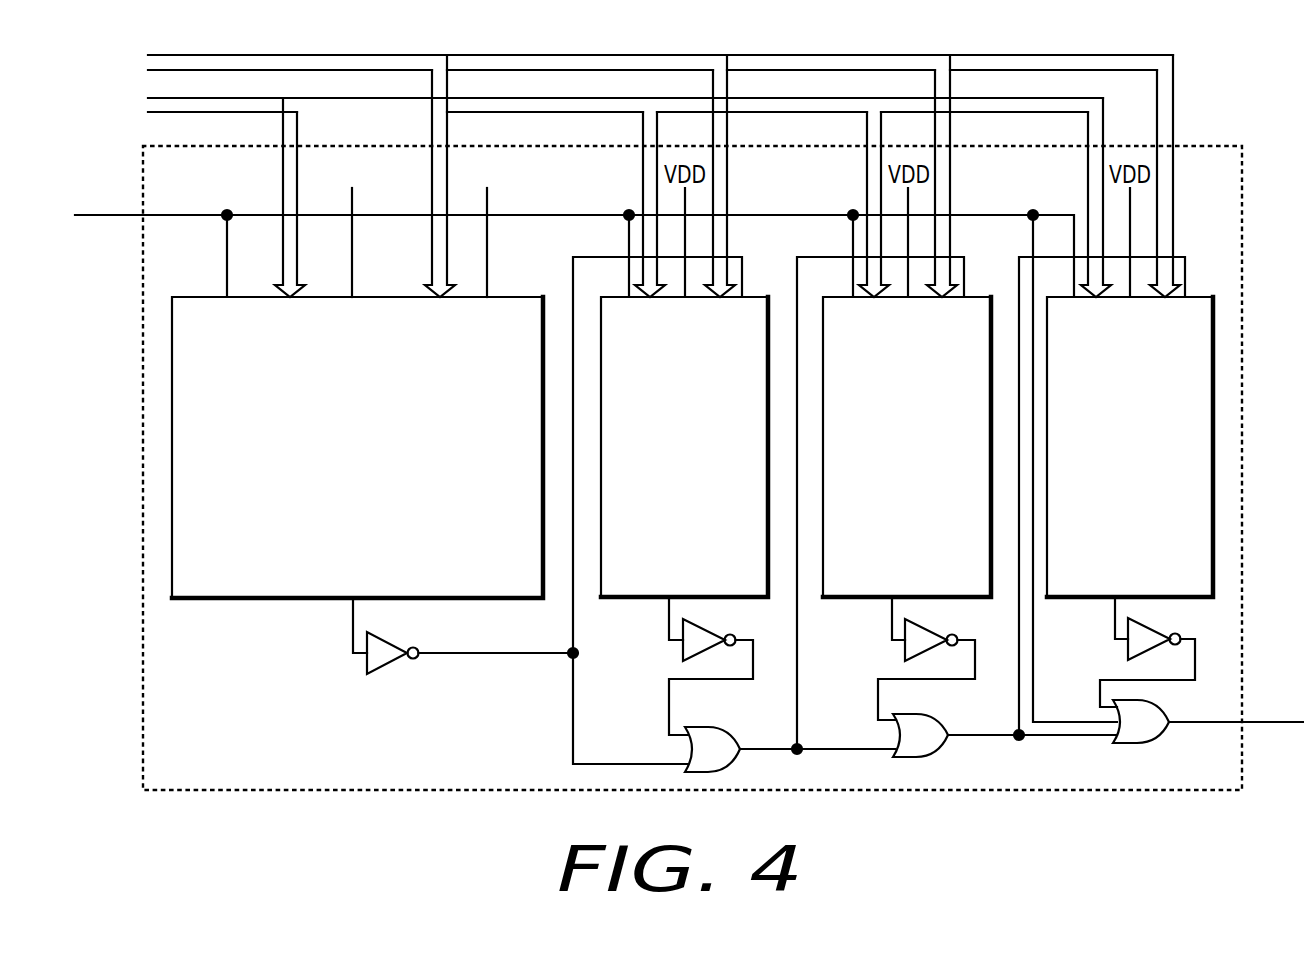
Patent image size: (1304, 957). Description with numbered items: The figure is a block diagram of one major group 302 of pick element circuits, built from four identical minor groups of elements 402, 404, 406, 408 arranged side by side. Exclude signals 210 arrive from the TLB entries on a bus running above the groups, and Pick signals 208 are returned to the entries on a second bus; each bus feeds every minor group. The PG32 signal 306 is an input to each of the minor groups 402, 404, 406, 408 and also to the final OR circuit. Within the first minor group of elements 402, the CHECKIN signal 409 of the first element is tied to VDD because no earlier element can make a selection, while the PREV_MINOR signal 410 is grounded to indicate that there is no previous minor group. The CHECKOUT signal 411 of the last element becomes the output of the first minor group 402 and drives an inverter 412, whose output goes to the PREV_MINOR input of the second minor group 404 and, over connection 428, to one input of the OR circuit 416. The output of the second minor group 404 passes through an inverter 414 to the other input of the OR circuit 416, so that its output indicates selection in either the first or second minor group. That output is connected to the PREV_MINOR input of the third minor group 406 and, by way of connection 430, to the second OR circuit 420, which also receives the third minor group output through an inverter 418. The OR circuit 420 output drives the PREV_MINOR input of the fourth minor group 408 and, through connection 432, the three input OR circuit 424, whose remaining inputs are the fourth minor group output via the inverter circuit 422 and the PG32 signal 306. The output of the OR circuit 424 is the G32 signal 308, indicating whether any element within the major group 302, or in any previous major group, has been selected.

The Pick signal 208 is at (195, 113).
The Exclude signal 210 is at (400, 56).
The major group 302 is at (482, 147).
The PG32 signal 306 is at (92, 218).
The G32 signal 308 is at (1247, 721).
The first minor group of elements 402 is at (373, 394).
The second minor group 404 is at (710, 396).
The third minor group 406 is at (930, 396).
The fourth minor group 408 is at (1153, 396).
The CHECKIN signal 409 is at (352, 268).
The PREV_MINOR signal 410 is at (487, 268).
The CHECKOUT signal 411 is at (352, 630).
The inverter 412 is at (375, 672).
The inverter 414 is at (700, 628).
The OR circuit 416 is at (722, 730).
The inverter 418 is at (922, 628).
The OR circuit 420 is at (940, 755).
The inverter circuit 422 is at (1145, 625).
The three input OR circuit 424 is at (1162, 742).
The feedback signal line 428 is at (573, 695).
The feedback signal line 430 is at (797, 680).
The feedback signal line 432 is at (1019, 685).